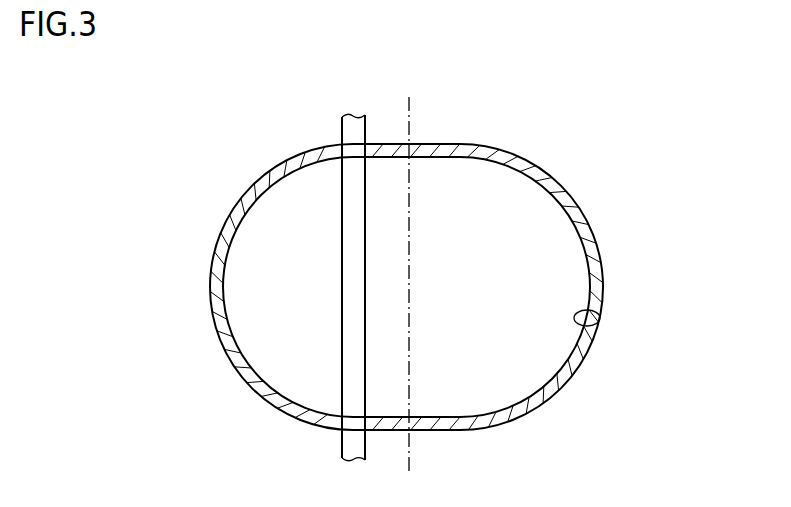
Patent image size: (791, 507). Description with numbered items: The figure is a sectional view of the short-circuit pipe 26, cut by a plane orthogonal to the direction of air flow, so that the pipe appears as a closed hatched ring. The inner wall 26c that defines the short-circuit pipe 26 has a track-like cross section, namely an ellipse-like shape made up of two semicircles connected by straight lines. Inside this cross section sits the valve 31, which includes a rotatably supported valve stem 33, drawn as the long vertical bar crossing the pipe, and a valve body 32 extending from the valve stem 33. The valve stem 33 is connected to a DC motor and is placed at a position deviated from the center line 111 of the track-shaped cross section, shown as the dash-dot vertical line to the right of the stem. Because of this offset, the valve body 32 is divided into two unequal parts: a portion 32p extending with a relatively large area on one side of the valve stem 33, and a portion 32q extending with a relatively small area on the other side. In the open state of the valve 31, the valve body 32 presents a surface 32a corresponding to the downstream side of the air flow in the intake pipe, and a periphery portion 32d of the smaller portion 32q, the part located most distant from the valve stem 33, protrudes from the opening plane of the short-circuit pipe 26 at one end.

The valve body 32 is at (447, 47).
The portion of valve body 32q is at (303, 195).
The portion of valve body 32p is at (450, 188).
The valve 31 is at (502, 158).
The surface 32a is at (563, 245).
The short-circuit pipe 26 is at (600, 283).
The inner wall 26c is at (580, 328).
The periphery portion 32d is at (222, 292).
The valve stem 33 is at (348, 382).
The center line 111 is at (436, 427).